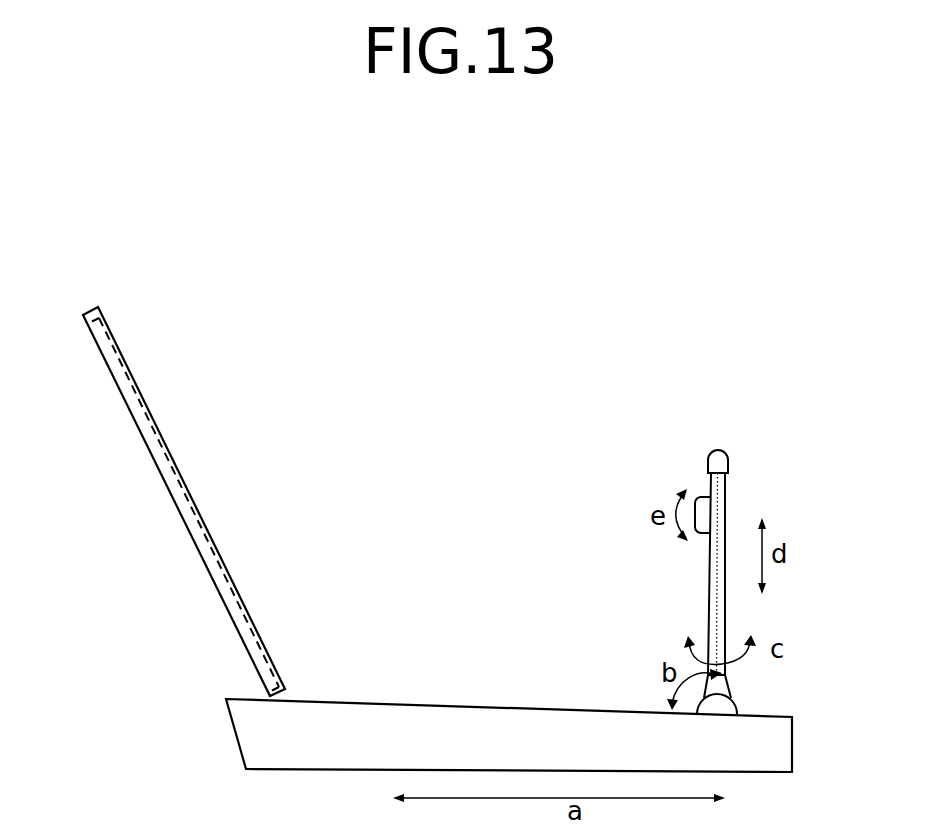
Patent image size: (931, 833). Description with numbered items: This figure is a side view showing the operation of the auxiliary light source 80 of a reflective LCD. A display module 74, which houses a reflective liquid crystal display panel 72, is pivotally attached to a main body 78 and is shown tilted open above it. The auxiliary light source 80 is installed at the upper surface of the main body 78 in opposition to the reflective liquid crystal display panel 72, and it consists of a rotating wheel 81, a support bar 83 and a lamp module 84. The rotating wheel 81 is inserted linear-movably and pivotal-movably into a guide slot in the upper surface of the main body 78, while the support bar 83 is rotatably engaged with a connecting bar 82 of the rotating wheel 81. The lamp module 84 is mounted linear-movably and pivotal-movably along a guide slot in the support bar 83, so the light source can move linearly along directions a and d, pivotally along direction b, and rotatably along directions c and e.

The reflective liquid crystal display panel 72 is at (120, 355).
The display module 74 is at (138, 427).
The main body 78 is at (790, 747).
The auxiliary light source 80 is at (738, 383).
The rotating wheel 81 is at (731, 701).
The connecting bar 82 is at (723, 683).
The support bar 83 is at (722, 608).
The lamp module 84 is at (692, 478).